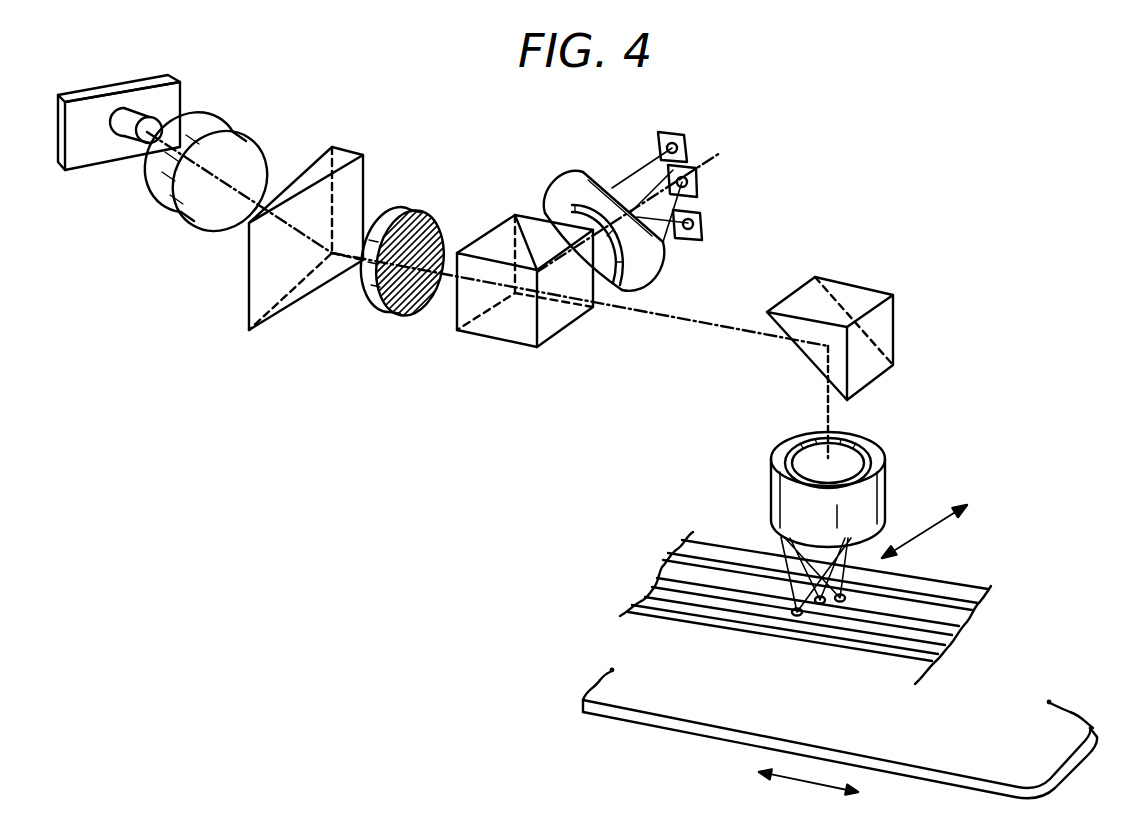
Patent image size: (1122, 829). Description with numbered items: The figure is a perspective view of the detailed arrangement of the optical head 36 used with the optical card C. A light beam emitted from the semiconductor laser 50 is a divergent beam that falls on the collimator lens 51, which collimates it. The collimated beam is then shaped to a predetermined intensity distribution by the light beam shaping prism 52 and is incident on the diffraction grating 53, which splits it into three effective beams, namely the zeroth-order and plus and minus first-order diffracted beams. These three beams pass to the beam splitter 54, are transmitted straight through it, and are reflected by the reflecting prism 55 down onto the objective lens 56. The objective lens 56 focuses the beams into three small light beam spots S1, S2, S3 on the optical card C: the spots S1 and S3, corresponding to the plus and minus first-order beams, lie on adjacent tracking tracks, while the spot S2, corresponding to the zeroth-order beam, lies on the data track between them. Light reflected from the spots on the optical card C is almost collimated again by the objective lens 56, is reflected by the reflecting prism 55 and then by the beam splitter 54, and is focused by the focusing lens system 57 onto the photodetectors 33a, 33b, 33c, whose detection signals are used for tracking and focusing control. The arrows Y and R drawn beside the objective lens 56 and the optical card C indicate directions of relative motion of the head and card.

The semiconductor laser 50 is at (180, 92).
The collimator lens 51 is at (250, 138).
The light beam shaping prism 52 is at (348, 148).
The diffraction grating 53 is at (427, 208).
The beam splitter 54 is at (512, 335).
The reflecting prism 55 is at (868, 287).
The objective lens 56 is at (883, 483).
The focusing lens system 57 is at (586, 155).
The photodetector 33a is at (680, 132).
The photodetector 33b is at (698, 180).
The photodetector 33c is at (702, 223).
The optical head 36 is at (826, 208).
The optical card C is at (697, 729).
The light beam spot S1 is at (795, 616).
The light beam spot S2 is at (820, 604).
The light beam spot S3 is at (841, 602).
The tangential (track) direction Y is at (924, 531).
The radial direction R is at (808, 793).